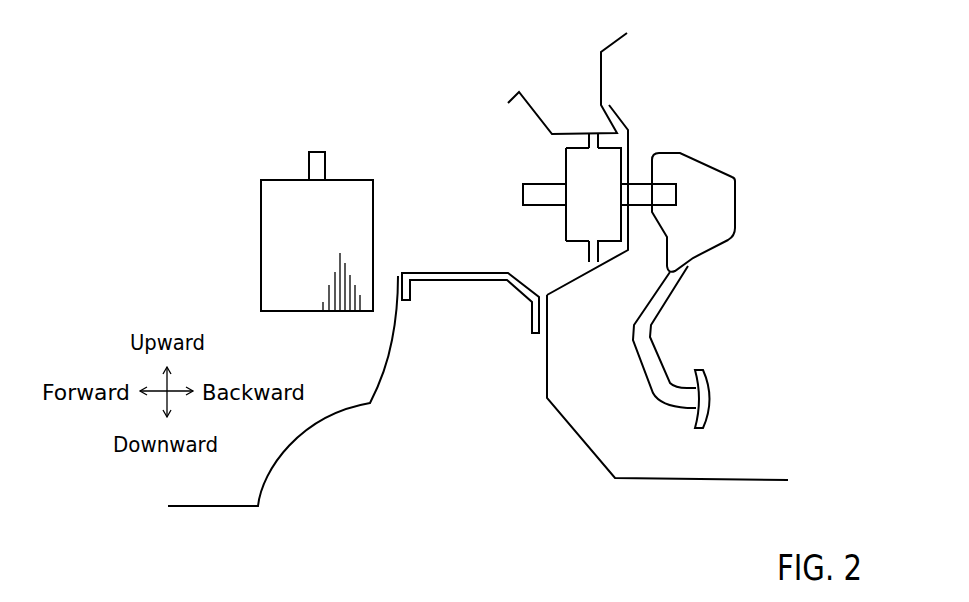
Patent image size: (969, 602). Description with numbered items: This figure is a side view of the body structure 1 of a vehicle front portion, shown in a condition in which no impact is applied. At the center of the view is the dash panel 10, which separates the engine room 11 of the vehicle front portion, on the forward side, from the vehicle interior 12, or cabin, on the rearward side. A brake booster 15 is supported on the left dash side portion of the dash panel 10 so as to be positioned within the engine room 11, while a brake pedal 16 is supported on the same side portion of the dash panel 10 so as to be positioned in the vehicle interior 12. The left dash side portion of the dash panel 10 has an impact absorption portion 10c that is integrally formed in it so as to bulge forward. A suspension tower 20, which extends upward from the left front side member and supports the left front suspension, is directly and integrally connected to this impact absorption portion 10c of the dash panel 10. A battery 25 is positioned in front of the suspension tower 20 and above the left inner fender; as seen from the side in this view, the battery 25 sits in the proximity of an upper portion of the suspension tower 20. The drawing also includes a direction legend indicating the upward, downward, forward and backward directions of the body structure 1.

The body structure 1 is at (545, 81).
The dash panel 10 is at (630, 119).
The impact absorption portion 10c is at (545, 348).
The engine room 11 is at (378, 108).
The vehicle interior 12 is at (831, 137).
The brake booster 15 is at (572, 168).
The brake pedal 16 is at (648, 352).
The suspension tower 20 is at (447, 273).
The battery 25 is at (283, 202).